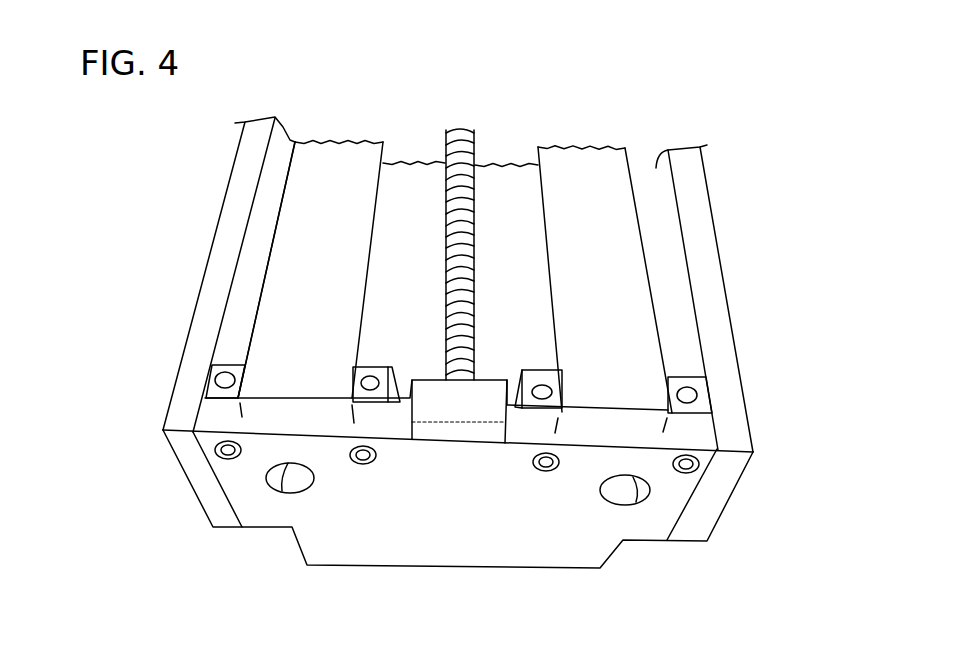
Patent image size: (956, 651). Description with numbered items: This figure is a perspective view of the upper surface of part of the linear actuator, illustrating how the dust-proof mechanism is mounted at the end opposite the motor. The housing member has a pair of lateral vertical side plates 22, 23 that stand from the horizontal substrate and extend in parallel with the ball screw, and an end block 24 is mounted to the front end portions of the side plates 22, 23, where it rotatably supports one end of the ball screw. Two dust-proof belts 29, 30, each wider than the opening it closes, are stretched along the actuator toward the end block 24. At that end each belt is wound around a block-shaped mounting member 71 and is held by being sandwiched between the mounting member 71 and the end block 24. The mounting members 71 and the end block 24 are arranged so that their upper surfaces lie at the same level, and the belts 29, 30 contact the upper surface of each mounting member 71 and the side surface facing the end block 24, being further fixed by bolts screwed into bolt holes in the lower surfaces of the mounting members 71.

The vertical side plate 22 is at (200, 300).
The vertical side plate 23 is at (722, 347).
The end block 24 is at (648, 527).
The dust-proof belt 29 is at (343, 162).
The dust-proof belt 30 is at (598, 162).
The mounting member 71 is at (383, 367).